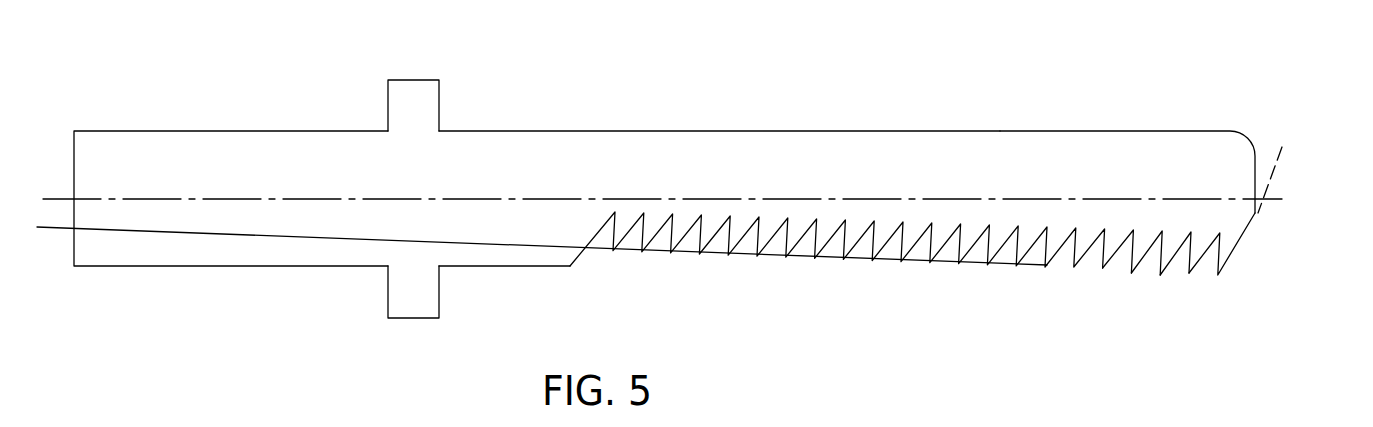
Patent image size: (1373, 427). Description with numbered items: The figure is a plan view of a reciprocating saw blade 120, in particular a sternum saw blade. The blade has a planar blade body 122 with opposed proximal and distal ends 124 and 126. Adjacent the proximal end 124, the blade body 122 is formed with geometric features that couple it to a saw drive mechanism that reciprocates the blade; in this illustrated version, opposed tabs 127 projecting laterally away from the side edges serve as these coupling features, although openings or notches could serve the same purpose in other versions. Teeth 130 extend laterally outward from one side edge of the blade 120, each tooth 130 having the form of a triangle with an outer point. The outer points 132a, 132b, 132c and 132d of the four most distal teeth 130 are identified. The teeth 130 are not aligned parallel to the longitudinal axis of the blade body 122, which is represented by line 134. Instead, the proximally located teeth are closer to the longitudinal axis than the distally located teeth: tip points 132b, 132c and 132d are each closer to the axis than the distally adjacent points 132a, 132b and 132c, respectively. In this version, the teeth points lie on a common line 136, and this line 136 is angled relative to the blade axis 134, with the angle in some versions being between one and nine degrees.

The saw blade 120 is at (875, 108).
The planar blade body 122 is at (654, 172).
The proximal end 124 is at (167, 171).
The distal end 126 is at (1160, 173).
The tabs 127 is at (407, 101).
The teeth 130 is at (605, 250).
The outer point 132a is at (1218, 275).
The outer point 132b is at (1189, 273).
The outer point 132c is at (1160, 275).
The outer point 132d is at (1131, 273).
The line representing longitudinal axis 134 is at (1282, 147).
The line 136 is at (215, 240).